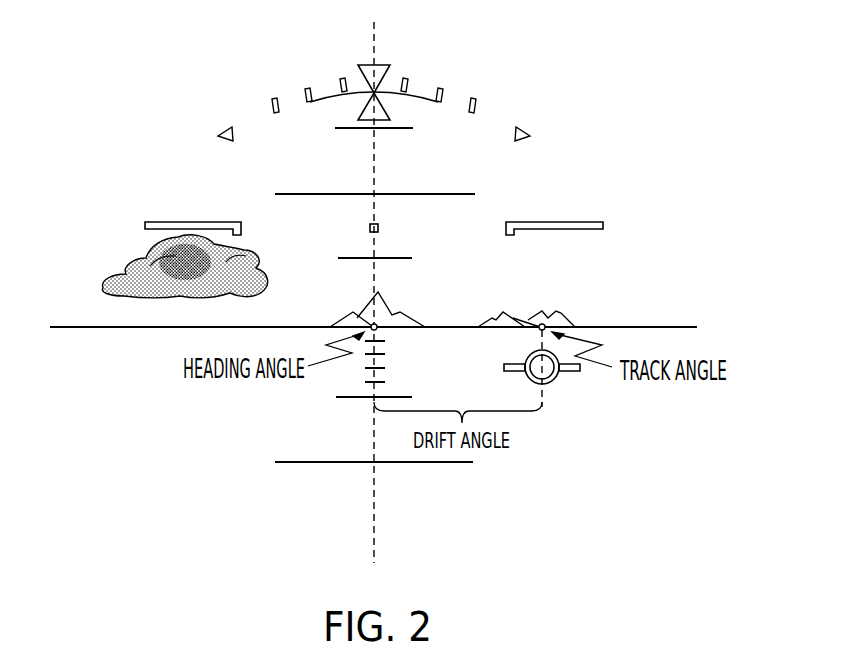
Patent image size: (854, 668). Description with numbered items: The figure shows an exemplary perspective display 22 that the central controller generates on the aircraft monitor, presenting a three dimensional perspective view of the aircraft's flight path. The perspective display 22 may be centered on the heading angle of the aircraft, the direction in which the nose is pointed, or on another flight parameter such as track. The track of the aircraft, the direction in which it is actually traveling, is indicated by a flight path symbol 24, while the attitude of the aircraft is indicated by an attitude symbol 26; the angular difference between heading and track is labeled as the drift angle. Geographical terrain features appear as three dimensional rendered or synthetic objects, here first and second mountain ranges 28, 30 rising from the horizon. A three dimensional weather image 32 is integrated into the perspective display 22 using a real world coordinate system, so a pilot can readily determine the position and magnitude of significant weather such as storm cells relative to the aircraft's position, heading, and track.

The perspective display 22 is at (563, 98).
The flight path symbol 24 is at (556, 386).
The attitude symbol 26 is at (173, 220).
The first mountain range 28 is at (347, 314).
The second mountain range 30 is at (520, 310).
The three dimensional weather image 32 is at (127, 268).